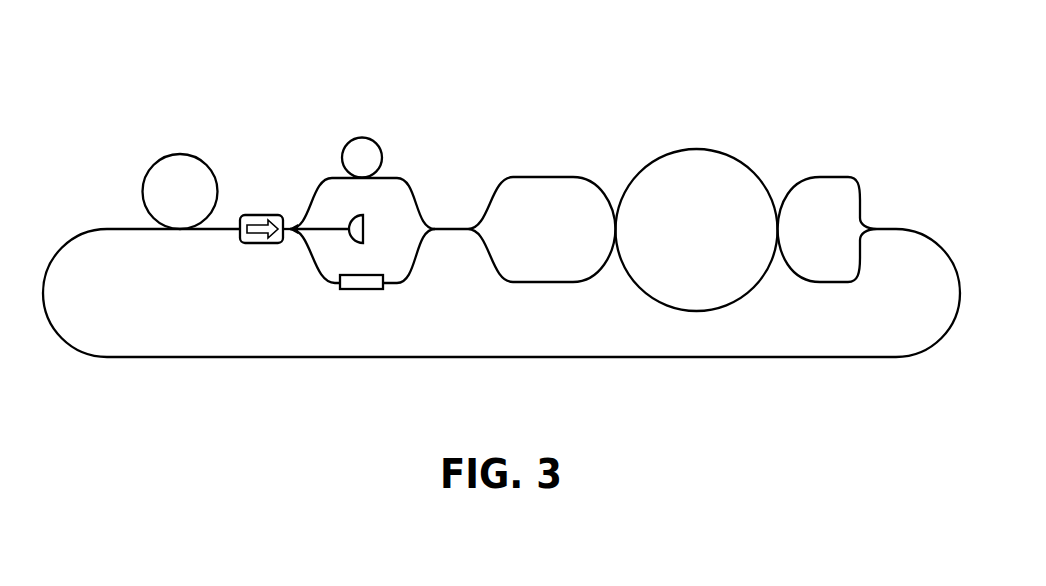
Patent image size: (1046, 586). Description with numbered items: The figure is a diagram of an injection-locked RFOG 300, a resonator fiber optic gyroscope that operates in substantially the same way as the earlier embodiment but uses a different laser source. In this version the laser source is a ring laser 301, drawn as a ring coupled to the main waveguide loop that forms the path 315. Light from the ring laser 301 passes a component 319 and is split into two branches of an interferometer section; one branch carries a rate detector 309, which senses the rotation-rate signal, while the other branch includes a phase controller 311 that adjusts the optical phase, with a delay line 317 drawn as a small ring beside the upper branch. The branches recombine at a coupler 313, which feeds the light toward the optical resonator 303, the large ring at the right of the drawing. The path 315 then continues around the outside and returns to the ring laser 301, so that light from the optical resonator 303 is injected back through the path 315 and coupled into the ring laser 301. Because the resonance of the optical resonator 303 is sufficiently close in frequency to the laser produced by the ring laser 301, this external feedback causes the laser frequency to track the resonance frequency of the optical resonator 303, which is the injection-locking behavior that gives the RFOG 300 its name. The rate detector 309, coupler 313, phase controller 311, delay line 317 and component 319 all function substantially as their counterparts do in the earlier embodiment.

The injection-locked RFOG 300 is at (124, 85).
The ring laser 301 is at (218, 180).
The optical resonator 303 is at (702, 149).
The rate detector 309 is at (348, 214).
The phase controller 311 is at (362, 289).
The coupler 313 is at (440, 231).
The path 315 is at (553, 357).
The delay line 317 is at (342, 158).
The component 319 is at (263, 245).